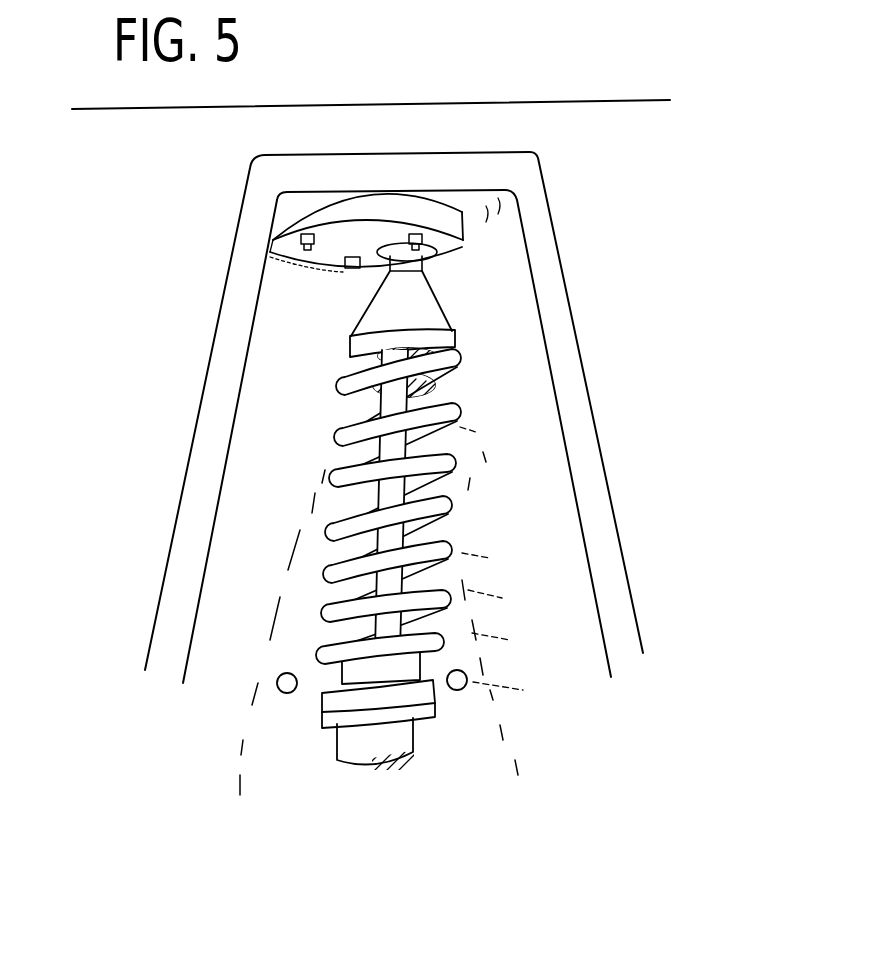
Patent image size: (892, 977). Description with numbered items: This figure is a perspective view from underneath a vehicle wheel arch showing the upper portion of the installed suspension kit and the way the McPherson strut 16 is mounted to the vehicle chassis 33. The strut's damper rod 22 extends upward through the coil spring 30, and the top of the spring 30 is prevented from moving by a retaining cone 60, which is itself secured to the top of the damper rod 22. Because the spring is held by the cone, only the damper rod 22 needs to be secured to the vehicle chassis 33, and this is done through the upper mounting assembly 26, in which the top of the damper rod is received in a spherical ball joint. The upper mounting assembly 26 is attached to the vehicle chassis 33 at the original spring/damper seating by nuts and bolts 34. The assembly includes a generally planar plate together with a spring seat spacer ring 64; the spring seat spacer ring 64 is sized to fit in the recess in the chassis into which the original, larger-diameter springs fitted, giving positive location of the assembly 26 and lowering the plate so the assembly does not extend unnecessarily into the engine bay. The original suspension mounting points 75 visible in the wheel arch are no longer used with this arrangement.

The McPherson strut 16 is at (425, 755).
The damper rod 22 is at (370, 534).
The upper mounting assembly 26 is at (377, 229).
The spring 30 is at (421, 521).
The vehicle chassis 33 is at (566, 296).
The nuts and bolts 34 is at (341, 272).
The retaining cone 60 is at (436, 275).
The spring seat spacer ring 64 is at (287, 228).
The original suspension mounting points 75 is at (479, 696).